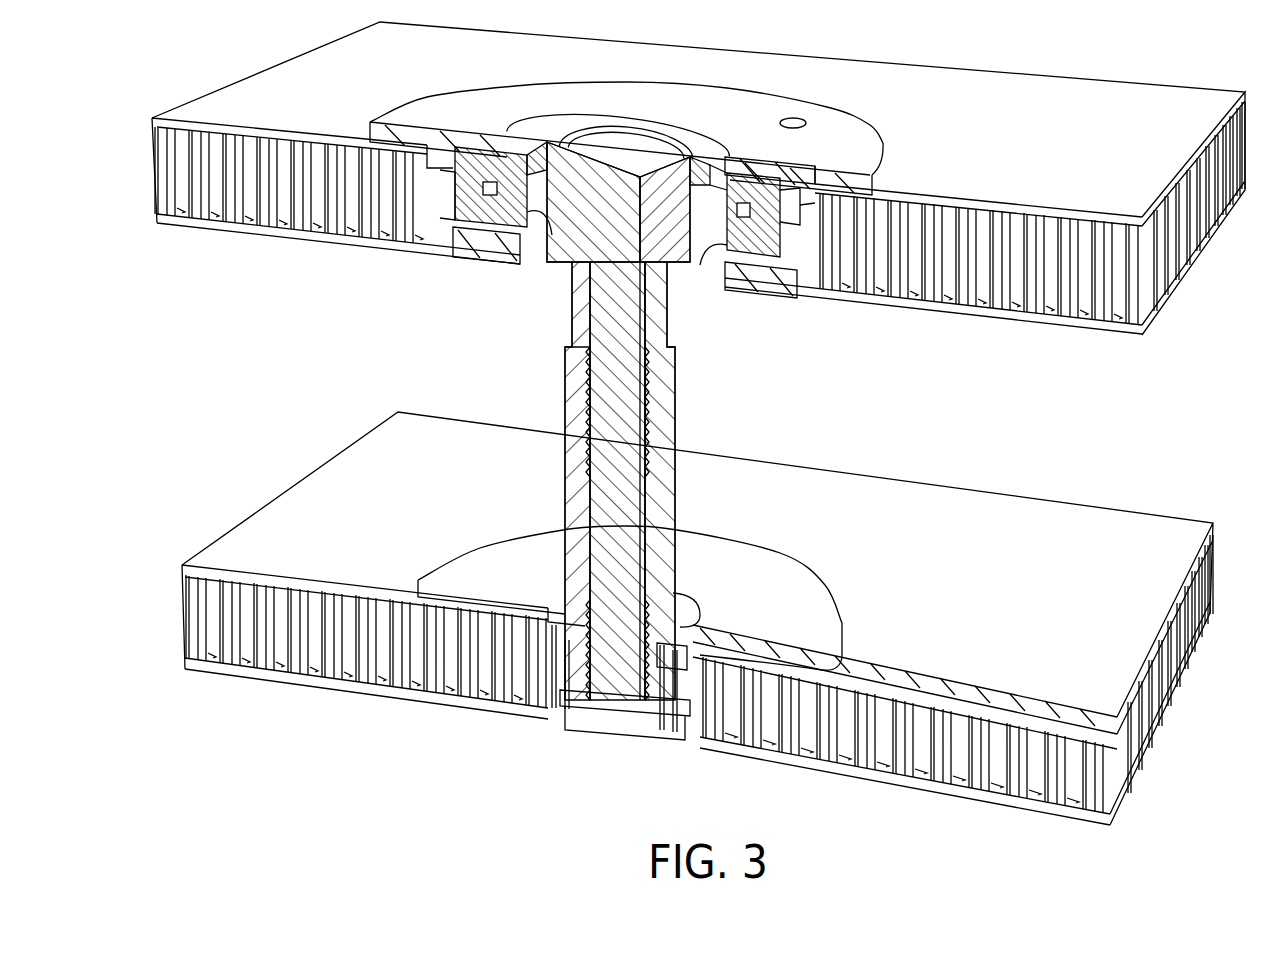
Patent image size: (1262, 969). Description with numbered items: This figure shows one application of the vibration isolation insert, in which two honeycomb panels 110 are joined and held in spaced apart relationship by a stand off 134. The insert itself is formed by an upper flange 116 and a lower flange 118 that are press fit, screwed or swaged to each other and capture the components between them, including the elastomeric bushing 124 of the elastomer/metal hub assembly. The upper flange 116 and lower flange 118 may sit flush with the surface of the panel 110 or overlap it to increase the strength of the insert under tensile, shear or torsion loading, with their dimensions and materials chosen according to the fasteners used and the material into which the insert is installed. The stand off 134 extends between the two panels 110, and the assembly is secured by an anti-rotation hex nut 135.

The panel 110 is at (1078, 88).
The upper flange 116 is at (478, 98).
The lower flange 118 is at (788, 292).
The elastomeric bushing 124 is at (766, 190).
The stand off 134 is at (578, 506).
The anti-rotation hex nut 135 is at (584, 626).